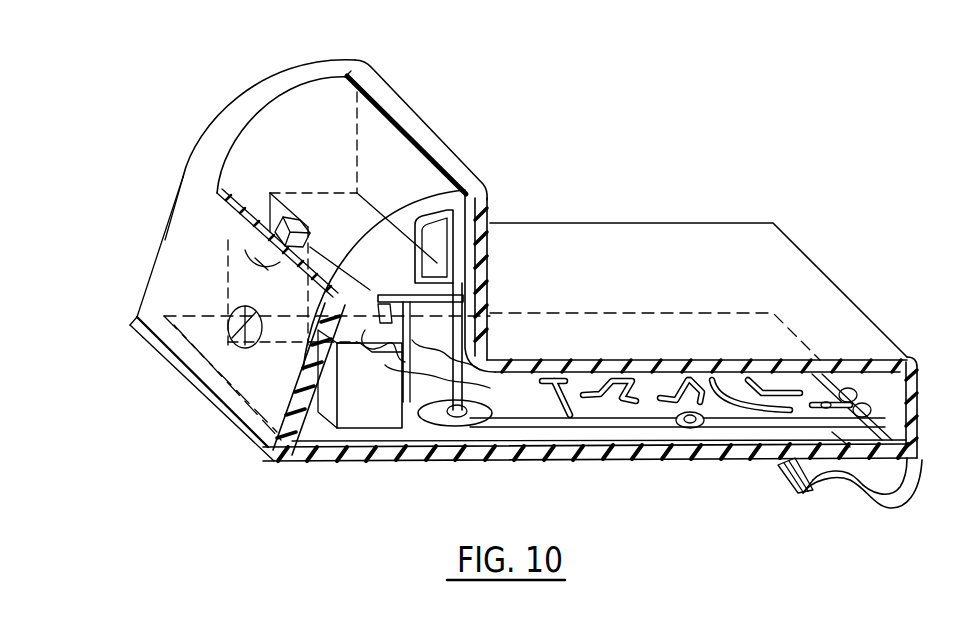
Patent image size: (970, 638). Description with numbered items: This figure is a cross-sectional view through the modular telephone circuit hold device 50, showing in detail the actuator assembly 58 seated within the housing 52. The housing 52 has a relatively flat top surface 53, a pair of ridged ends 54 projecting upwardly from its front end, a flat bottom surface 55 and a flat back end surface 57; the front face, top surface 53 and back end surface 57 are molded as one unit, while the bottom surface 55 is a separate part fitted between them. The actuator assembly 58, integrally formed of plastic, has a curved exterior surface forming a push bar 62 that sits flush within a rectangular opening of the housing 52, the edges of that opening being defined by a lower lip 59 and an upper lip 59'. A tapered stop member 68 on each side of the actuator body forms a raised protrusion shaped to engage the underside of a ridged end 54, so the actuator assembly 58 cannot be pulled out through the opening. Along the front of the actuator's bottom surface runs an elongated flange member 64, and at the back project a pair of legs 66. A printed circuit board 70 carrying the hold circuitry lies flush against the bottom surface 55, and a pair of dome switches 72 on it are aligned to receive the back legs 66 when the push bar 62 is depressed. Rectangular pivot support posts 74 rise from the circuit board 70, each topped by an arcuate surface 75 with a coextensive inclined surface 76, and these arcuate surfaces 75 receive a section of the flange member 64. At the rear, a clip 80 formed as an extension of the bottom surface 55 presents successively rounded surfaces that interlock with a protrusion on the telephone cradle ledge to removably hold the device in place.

The telephone circuit hold device 50 is at (645, 178).
The housing 52 is at (172, 265).
The flat top surface 53 is at (727, 228).
The ridged ends 54 is at (253, 93).
The bottom surface 55 is at (457, 457).
The back end surface 57 is at (917, 398).
The actuator assembly 58 is at (367, 231).
The lower lip 59 is at (159, 204).
The upper lip 59' is at (477, 249).
The push bar 62 is at (388, 140).
The elongated flange member 64 is at (243, 290).
The legs 66 is at (410, 316).
The stop member 68 is at (413, 273).
The printed circuit board 70 is at (690, 430).
The dome switch 72 is at (436, 345).
The pivot support post 74 is at (360, 379).
The arcuate surface 75 is at (380, 366).
The inclined surface 76 is at (382, 324).
The clip 80 is at (876, 500).